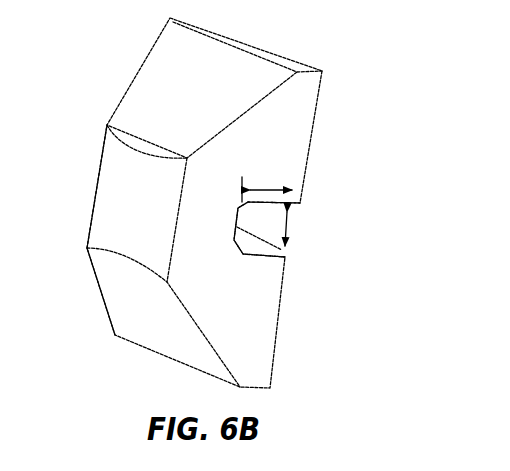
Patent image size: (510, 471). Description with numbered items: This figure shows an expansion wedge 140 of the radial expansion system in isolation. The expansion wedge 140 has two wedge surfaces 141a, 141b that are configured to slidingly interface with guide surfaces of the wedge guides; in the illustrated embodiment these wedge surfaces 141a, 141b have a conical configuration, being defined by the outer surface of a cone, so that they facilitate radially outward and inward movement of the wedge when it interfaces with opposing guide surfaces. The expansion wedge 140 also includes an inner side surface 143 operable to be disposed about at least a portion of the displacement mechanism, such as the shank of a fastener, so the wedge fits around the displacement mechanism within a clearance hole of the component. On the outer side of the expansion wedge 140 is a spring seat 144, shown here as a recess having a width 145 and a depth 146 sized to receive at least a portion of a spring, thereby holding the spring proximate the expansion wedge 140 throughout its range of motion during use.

The expansion wedge 140 is at (97, 31).
The wedge surface 141a is at (183, 90).
The wedge surface 141b is at (138, 303).
The inner side surface 143 is at (130, 200).
The spring seat 144 is at (301, 232).
The width 145 is at (287, 237).
The depth 146 is at (275, 190).